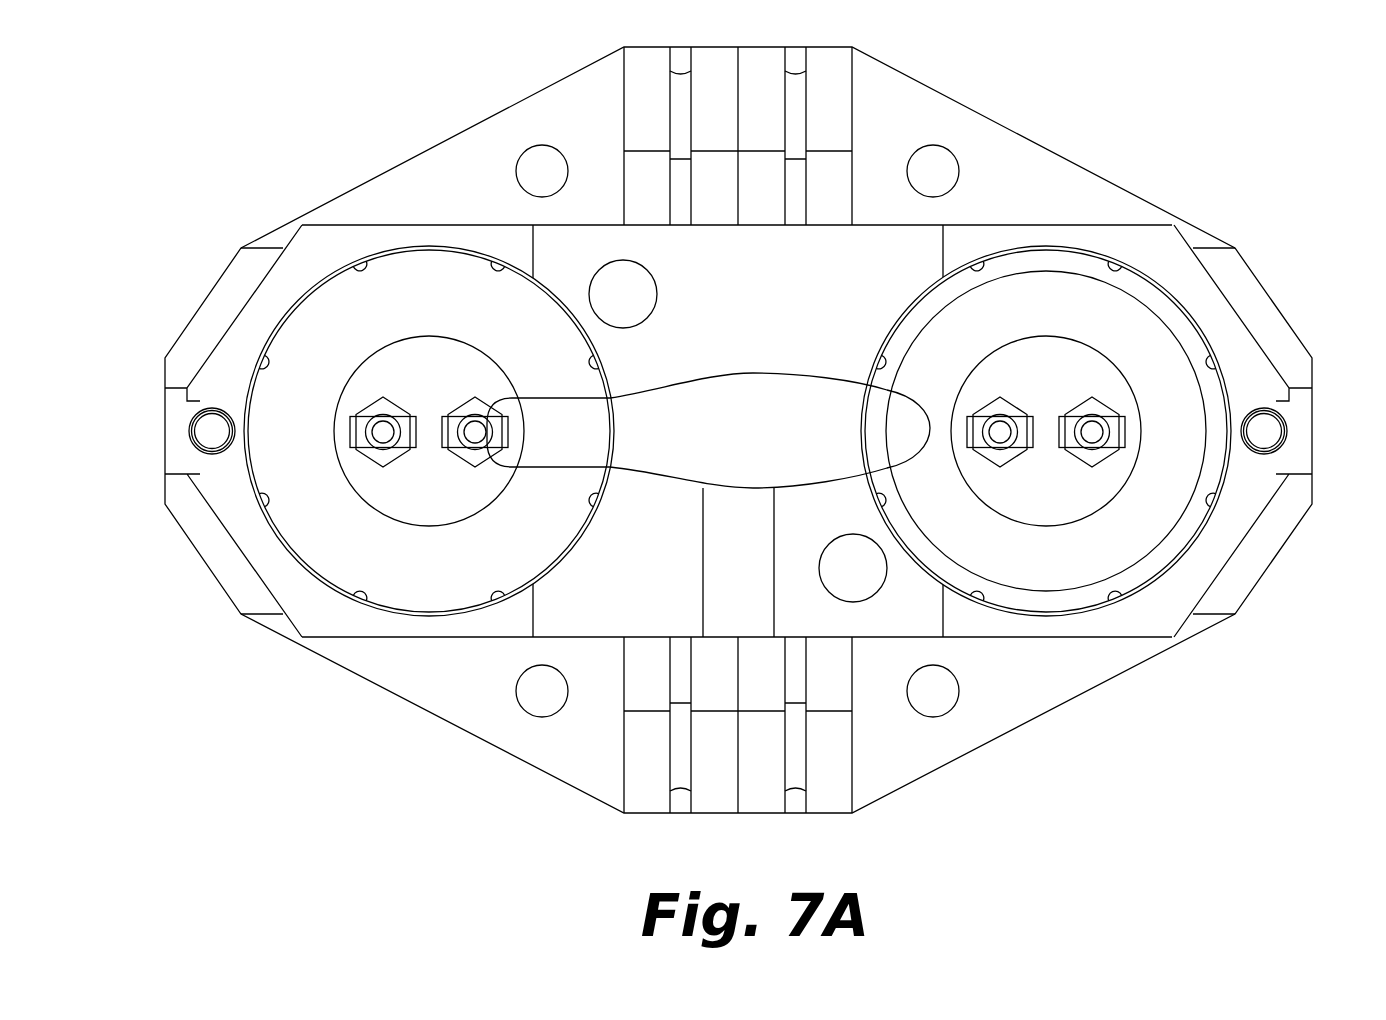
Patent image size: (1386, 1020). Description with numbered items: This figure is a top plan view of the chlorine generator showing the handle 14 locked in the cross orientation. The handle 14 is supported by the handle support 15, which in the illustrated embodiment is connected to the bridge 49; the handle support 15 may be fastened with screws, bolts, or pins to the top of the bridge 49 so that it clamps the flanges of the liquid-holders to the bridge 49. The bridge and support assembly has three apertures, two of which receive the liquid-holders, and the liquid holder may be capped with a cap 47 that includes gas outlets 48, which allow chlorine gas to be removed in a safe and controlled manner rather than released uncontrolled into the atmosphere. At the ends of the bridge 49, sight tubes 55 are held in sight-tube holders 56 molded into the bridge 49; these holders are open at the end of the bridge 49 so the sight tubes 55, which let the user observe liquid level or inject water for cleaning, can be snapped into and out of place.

The handle 14 is at (745, 454).
The handle support 15 is at (752, 301).
The cap 47 is at (1150, 323).
The gas outlets 48 is at (1092, 425).
The bridge 49 is at (340, 243).
The sight tubes 55 is at (208, 438).
The sight-tube holders 56 is at (208, 427).